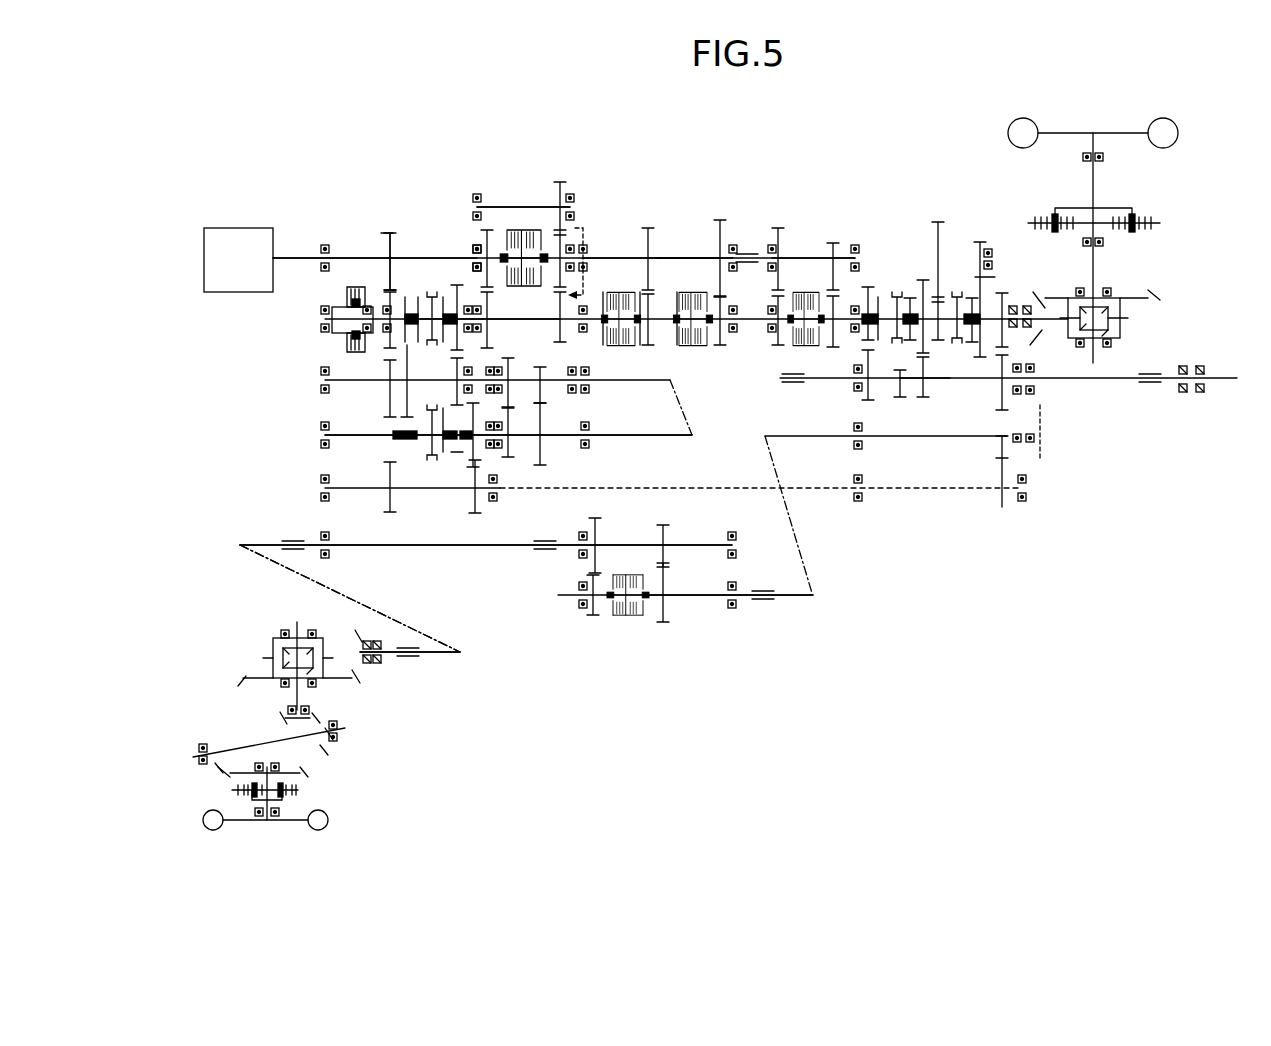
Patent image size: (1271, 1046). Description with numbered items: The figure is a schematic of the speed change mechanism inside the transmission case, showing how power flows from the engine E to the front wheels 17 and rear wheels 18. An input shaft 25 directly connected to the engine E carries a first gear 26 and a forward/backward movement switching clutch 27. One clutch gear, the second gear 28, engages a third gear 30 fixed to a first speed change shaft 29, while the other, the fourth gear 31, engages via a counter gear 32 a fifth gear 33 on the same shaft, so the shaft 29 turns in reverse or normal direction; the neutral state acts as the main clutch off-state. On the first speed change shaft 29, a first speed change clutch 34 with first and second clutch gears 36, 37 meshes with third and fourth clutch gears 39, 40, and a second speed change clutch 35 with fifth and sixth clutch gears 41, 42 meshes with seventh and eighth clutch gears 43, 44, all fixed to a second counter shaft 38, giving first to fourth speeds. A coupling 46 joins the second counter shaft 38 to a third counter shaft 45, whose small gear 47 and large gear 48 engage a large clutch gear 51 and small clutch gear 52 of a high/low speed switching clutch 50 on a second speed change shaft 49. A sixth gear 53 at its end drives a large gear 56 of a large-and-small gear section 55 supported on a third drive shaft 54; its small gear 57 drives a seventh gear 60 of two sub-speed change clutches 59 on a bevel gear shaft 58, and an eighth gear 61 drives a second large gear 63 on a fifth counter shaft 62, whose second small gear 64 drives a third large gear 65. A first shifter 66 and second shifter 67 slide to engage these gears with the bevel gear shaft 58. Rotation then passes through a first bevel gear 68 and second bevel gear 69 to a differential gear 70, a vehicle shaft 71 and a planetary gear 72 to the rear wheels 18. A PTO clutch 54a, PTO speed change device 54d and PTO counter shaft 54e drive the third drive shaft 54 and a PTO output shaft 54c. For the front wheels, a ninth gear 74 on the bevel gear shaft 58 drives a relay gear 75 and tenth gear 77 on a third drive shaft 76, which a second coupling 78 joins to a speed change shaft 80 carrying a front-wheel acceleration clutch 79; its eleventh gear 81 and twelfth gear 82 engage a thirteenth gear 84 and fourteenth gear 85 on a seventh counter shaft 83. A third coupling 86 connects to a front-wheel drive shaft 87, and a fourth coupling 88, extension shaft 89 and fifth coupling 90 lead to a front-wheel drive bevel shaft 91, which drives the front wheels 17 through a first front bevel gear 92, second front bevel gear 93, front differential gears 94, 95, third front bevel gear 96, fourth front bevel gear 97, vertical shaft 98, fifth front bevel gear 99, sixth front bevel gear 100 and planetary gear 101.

The engine E is at (262, 228).
The input shaft 25 is at (340, 258).
The first gear 26 is at (392, 250).
The second gear 28 is at (476, 248).
The forward/backward movement switching clutch 27 is at (522, 230).
The counter gear 32 is at (562, 182).
The fourth gear 31 is at (578, 225).
The third clutch gear 39 is at (586, 246).
The first speed change clutch 34 is at (623, 292).
The fourth clutch gear 40 is at (648, 248).
The second counter shaft 38 is at (672, 258).
The second speed change clutch 35 is at (696, 292).
The seventh clutch gear 43 is at (668, 263).
The eighth clutch gear 44 is at (722, 240).
The coupling 46 is at (748, 264).
The large gear 48 is at (790, 257).
The third counter shaft 45 is at (782, 255).
The small gear 47 is at (836, 250).
The second large gear 63 is at (936, 245).
The sixth gear 53 is at (899, 290).
The sub-speed change clutches 59 is at (906, 291).
The fifth counter shaft 62 is at (978, 240).
The second small gear 64 is at (993, 253).
The third large gear 65 is at (985, 285).
The bevel gear shaft 58 is at (1022, 305).
The second speed change shaft 49 is at (866, 312).
The high/low speed switching clutch 50 is at (810, 348).
The large clutch gear 51 is at (835, 330).
The small clutch gear 52 is at (775, 332).
The first clutch gear 36 is at (622, 348).
The second clutch gear 37 is at (640, 348).
The fifth clutch gear 41 is at (680, 348).
The sixth clutch gear 42 is at (722, 348).
The first speed change shaft 29 is at (515, 316).
The third gear 30 is at (490, 328).
The fifth gear 33 is at (558, 336).
The large gear 56 is at (921, 350).
The eighth gear 61 is at (970, 342).
The first shifter 66 is at (868, 345).
The seventh gear 60 is at (925, 390).
The large-and-small gear section 55 is at (902, 398).
The small gear 57 is at (928, 398).
The second shifter 67 is at (1002, 380).
The ninth gear 74 is at (1004, 340).
The first bevel gear 68 is at (1040, 330).
The relay gear 75 is at (1012, 405).
The third drive shaft 76 is at (928, 440).
The tenth gear 77 is at (1040, 460).
The third drive shaft 54 is at (1085, 378).
The PTO output shaft 54c is at (1203, 385).
The second bevel gear 69 is at (1150, 295).
The differential gear 70 is at (1122, 325).
The vehicle shaft 71 is at (1095, 262).
The planetary gear 72 is at (1115, 212).
The rear wheels 18 is at (1180, 132).
The PTO clutch 54a is at (339, 323).
The PTO speed change device 54d is at (384, 410).
The PTO counter shaft 54e is at (692, 436).
The third coupling 86 is at (547, 540).
The thirteenth gear 84 is at (598, 540).
The fourteenth gear 85 is at (665, 535).
The seventh counter shaft 83 is at (730, 538).
The front-wheel drive shaft 87 is at (487, 550).
The fourth coupling 88 is at (293, 538).
The extension shaft 89 is at (255, 543).
The eleventh gear 81 is at (586, 618).
The front-wheel acceleration clutch 79 is at (630, 618).
The twelfth gear 82 is at (665, 624).
The speed change shaft 80 is at (715, 598).
The second coupling 78 is at (763, 602).
The front differential gear 94 is at (297, 622).
The first front bevel gear 92 is at (355, 632).
The second front bevel gear 93 is at (262, 672).
The front differential gear 95 is at (310, 708).
The front-wheel drive bevel shaft 91 is at (376, 665).
The fifth coupling 90 is at (410, 660).
The third front bevel gear 96 is at (285, 718).
The vertical shaft 98 is at (243, 745).
The fifth front bevel gear 99 is at (208, 745).
The fourth front bevel gear 97 is at (335, 742).
The sixth front bevel gear 100 is at (228, 782).
The planetary gear 101 is at (300, 783).
The front wheels 17 is at (330, 820).